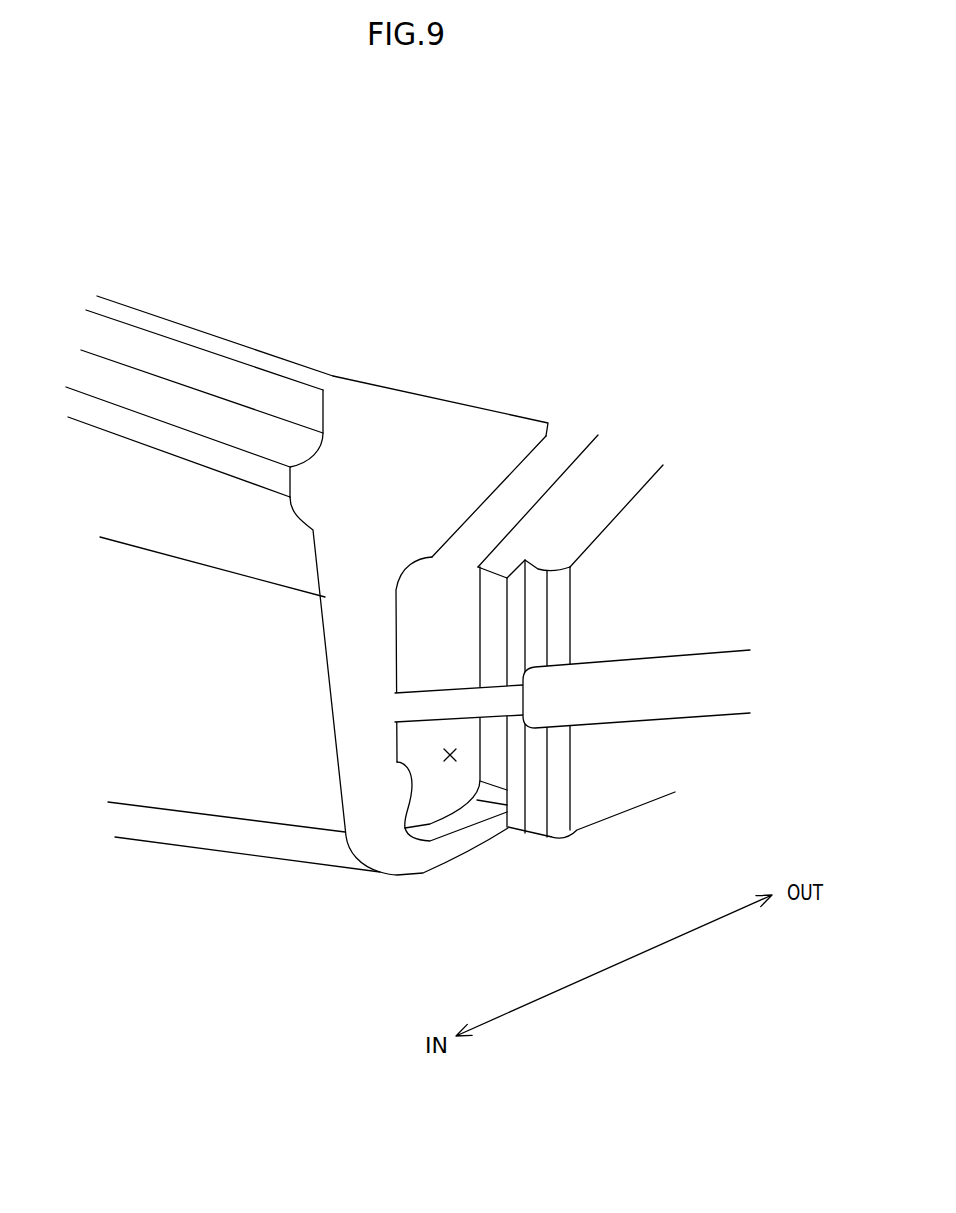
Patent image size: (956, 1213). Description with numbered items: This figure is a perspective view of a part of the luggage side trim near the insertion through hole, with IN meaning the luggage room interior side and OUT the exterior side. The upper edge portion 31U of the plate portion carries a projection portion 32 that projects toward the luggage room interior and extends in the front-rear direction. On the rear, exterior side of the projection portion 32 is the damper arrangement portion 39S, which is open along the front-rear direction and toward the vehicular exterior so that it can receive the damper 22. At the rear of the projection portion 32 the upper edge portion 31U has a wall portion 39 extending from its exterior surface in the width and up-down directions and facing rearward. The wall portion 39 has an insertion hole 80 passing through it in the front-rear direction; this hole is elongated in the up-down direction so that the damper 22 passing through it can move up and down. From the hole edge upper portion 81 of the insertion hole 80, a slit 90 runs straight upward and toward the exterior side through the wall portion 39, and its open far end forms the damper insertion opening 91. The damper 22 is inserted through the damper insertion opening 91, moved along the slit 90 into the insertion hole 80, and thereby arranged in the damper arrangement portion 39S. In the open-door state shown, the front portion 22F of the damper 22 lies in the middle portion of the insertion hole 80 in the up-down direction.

The upper edge portion 31U is at (207, 497).
The projection portion 32 is at (240, 785).
The wall portion 39 is at (362, 420).
The damper arrangement portion 39S is at (450, 755).
The insertion hole 80 is at (407, 827).
The hole edge upper portion 81 is at (433, 560).
The slit 90 is at (480, 516).
The damper insertion opening 91 is at (537, 433).
The damper 22 is at (687, 678).
The front portion of the damper 22F is at (485, 702).